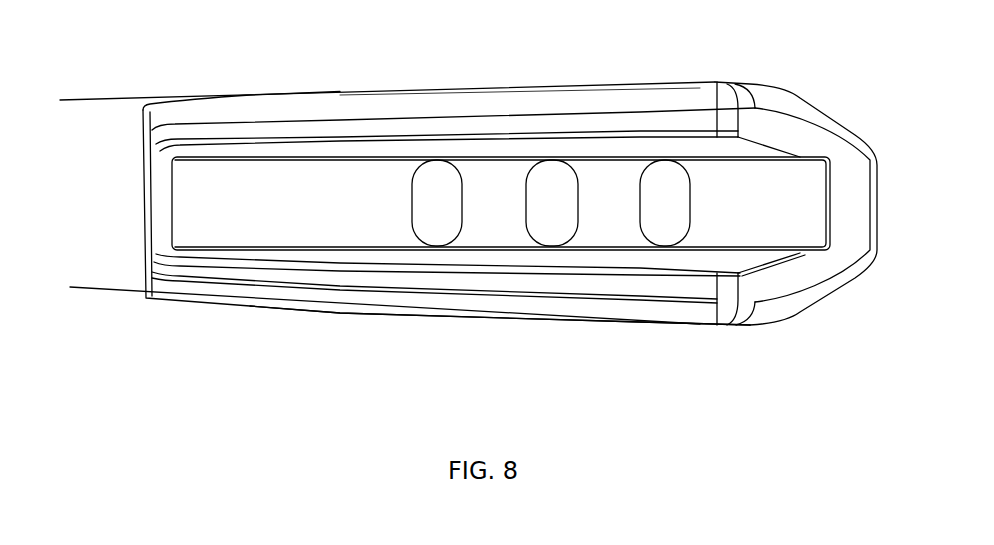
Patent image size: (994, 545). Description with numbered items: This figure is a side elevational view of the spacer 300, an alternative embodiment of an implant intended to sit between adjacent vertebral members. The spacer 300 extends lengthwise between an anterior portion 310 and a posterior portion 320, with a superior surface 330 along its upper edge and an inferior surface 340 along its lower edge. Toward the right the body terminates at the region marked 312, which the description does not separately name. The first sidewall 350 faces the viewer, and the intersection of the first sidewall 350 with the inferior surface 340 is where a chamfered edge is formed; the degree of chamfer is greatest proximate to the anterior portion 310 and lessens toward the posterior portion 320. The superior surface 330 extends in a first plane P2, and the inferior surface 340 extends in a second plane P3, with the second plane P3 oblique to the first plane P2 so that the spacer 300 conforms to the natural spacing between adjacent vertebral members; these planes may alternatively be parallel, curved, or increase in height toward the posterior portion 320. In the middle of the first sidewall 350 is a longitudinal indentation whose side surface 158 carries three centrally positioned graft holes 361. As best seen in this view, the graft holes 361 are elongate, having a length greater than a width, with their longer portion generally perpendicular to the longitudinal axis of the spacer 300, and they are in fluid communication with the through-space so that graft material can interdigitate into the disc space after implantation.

The spacer 300 is at (763, 62).
The anterior portion 310 is at (713, 82).
The rounded end cap 312 is at (790, 98).
The posterior portion 320 is at (150, 200).
The superior surface 330 is at (437, 90).
The inferior surface 340 is at (531, 323).
The first sidewall 350 is at (268, 279).
The graft holes 361 is at (432, 205).
The side surface 158 is at (260, 183).
The first plane P2 is at (75, 100).
The second plane P3 is at (83, 288).